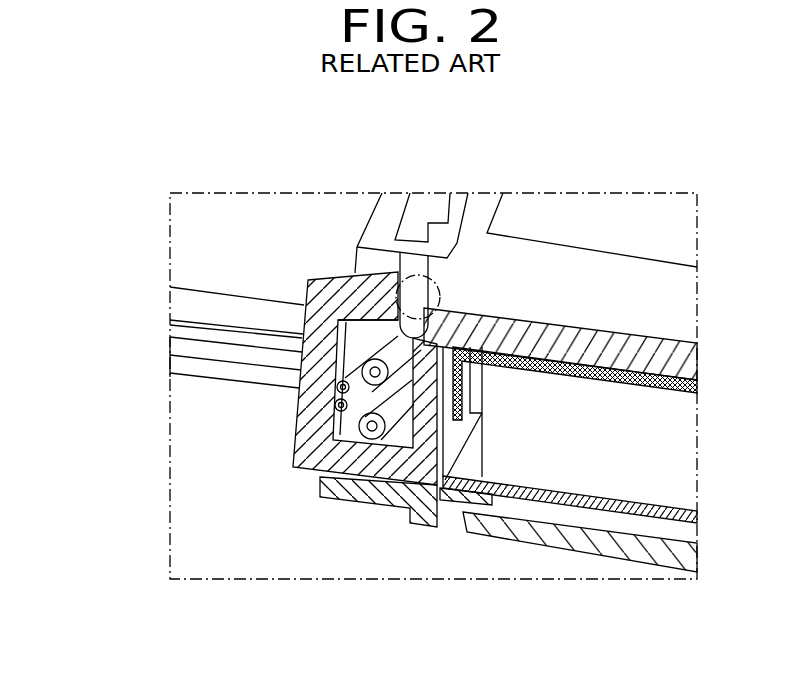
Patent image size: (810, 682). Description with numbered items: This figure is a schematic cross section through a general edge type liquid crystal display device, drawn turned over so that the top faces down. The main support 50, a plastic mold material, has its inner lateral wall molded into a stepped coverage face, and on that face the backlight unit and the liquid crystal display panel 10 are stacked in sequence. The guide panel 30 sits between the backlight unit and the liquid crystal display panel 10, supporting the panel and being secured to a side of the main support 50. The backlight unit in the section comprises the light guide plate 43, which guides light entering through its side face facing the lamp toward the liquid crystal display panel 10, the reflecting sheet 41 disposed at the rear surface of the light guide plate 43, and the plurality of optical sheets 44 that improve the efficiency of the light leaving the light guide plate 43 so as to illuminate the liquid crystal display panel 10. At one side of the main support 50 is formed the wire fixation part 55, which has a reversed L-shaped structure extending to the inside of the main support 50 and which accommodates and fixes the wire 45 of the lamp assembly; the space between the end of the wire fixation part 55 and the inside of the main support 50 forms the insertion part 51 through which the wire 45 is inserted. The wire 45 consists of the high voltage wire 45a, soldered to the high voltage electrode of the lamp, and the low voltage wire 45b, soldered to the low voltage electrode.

The liquid crystal display panel 10 is at (690, 553).
The guide panel 30 is at (372, 500).
The reflecting sheet 41 is at (697, 386).
The light guide plate 43 is at (683, 447).
The optical sheets 44 is at (697, 514).
The wire 45 is at (63, 270).
The high voltage wire 45a is at (180, 298).
The low voltage wire 45b is at (180, 331).
The main support 50 is at (398, 205).
The insertion part 51 is at (437, 290).
The wire fixation part 55 is at (325, 280).